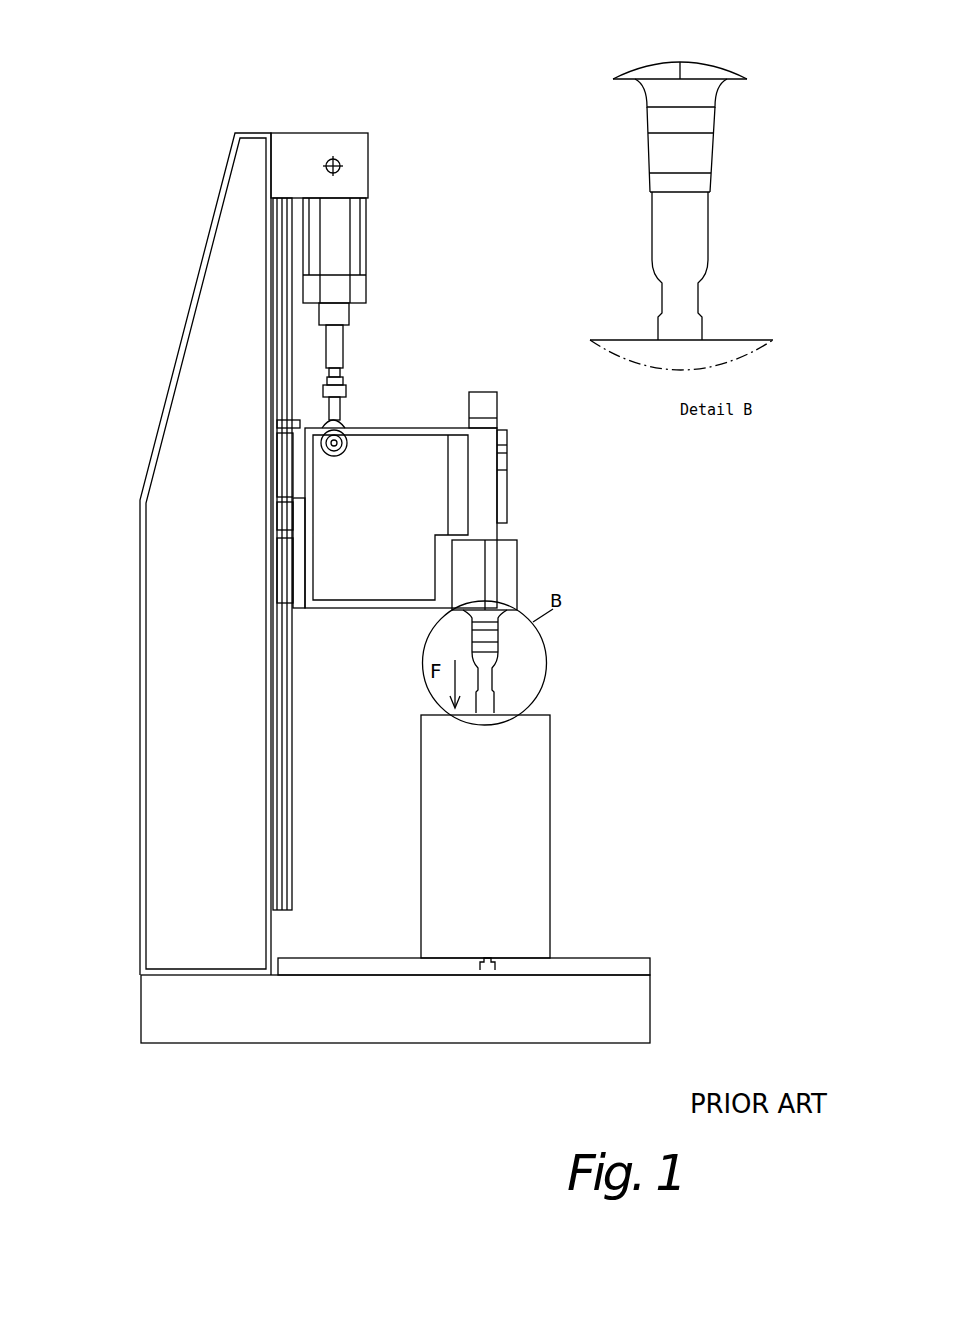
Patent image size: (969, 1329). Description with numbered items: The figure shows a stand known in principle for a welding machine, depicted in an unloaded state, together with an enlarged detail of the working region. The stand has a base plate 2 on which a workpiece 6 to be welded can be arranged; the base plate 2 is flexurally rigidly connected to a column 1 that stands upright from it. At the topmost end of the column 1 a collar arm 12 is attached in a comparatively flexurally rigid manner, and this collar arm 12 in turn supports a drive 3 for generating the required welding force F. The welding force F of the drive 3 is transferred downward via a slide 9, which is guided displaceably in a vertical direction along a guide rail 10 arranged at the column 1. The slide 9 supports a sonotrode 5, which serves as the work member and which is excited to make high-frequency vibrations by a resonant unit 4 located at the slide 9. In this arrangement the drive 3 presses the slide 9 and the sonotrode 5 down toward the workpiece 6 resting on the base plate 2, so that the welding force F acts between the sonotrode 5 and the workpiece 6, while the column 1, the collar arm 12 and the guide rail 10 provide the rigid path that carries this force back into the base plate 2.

The column 1 is at (180, 835).
The base plate 2 is at (409, 1008).
The drive 3 is at (335, 258).
The resonant unit 4 is at (490, 558).
The sonotrode 5 is at (478, 680).
The workpiece 6 is at (510, 865).
The slide 9 is at (388, 460).
The guide rail 10 is at (282, 763).
The collar arm 12 is at (303, 150).